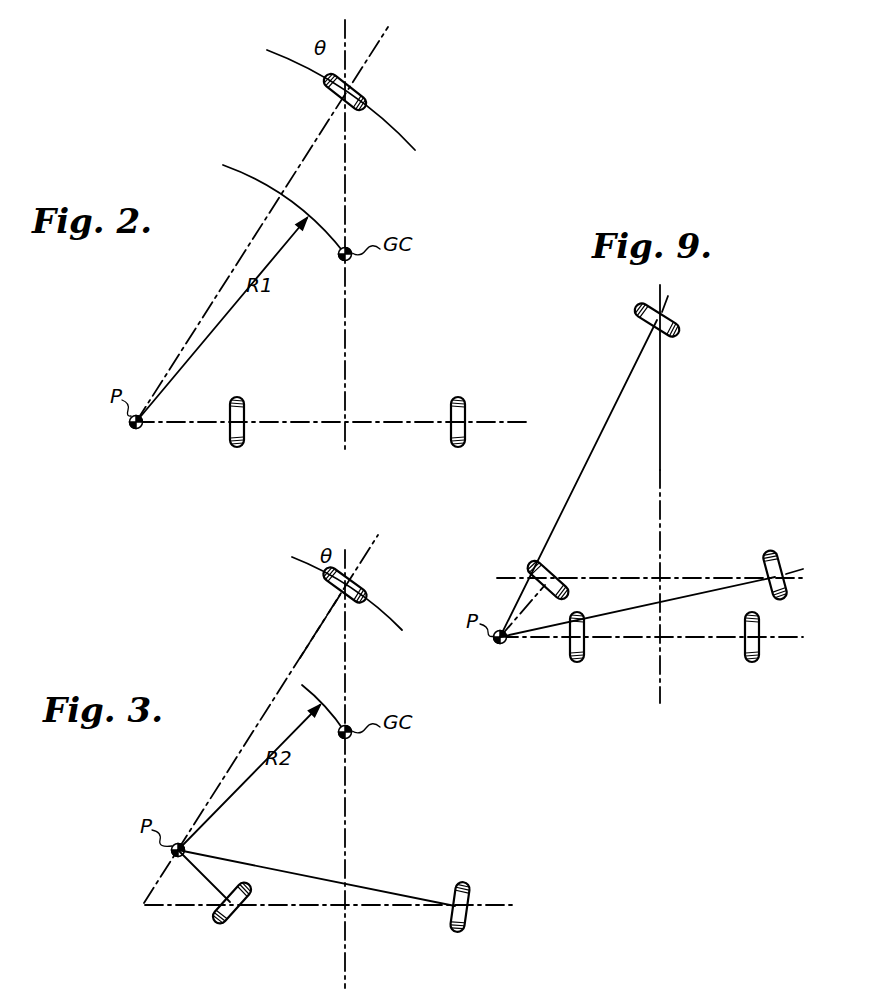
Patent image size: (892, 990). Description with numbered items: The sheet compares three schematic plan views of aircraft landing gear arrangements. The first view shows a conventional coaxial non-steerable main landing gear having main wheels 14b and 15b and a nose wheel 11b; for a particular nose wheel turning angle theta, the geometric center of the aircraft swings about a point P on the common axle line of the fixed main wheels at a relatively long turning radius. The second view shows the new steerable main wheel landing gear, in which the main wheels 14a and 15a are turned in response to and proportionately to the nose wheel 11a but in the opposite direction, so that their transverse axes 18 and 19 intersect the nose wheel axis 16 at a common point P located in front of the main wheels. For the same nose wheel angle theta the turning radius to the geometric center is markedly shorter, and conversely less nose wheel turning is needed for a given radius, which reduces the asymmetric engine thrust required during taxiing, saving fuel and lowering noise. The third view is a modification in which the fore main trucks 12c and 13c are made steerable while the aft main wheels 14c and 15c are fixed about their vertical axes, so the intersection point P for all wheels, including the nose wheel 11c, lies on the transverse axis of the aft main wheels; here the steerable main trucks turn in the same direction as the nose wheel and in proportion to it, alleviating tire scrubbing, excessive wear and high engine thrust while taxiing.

In FIG. 3, the nose wheel 11a is at (365, 587).
In FIG. 2, the nose wheel 11b is at (365, 93).
In FIG. 9, the nose wheel 11c is at (672, 321).
In FIG. 9, the fore main truck 12c is at (578, 556).
In FIG. 9, the fore main truck 13c is at (766, 563).
In FIG. 3, the main wheel 14a is at (221, 925).
In FIG. 2, the main wheel 14b is at (243, 398).
In FIG. 9, the aft main wheel 14c is at (568, 654).
In FIG. 3, the main wheel 15a is at (462, 933).
In FIG. 2, the main wheel 15b is at (464, 398).
In FIG. 9, the aft main wheel 15c is at (746, 655).
In FIG. 3, the nose wheel axis 16 is at (320, 620).
In FIG. 3, the transverse axis 18 is at (204, 874).
In FIG. 3, the transverse axis 19 is at (272, 868).